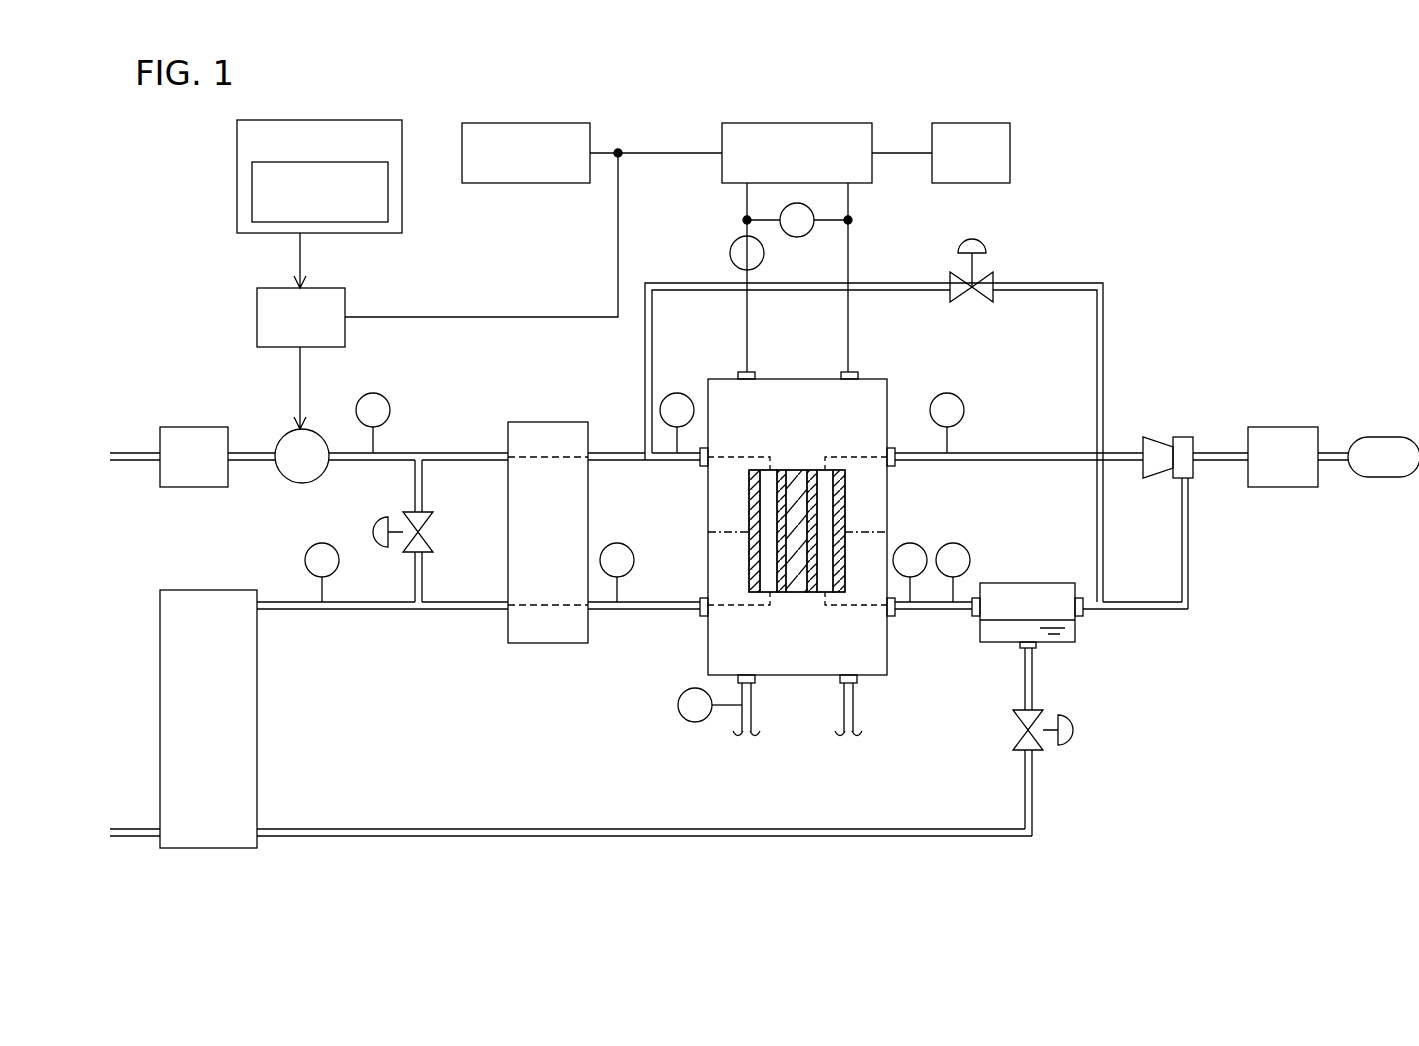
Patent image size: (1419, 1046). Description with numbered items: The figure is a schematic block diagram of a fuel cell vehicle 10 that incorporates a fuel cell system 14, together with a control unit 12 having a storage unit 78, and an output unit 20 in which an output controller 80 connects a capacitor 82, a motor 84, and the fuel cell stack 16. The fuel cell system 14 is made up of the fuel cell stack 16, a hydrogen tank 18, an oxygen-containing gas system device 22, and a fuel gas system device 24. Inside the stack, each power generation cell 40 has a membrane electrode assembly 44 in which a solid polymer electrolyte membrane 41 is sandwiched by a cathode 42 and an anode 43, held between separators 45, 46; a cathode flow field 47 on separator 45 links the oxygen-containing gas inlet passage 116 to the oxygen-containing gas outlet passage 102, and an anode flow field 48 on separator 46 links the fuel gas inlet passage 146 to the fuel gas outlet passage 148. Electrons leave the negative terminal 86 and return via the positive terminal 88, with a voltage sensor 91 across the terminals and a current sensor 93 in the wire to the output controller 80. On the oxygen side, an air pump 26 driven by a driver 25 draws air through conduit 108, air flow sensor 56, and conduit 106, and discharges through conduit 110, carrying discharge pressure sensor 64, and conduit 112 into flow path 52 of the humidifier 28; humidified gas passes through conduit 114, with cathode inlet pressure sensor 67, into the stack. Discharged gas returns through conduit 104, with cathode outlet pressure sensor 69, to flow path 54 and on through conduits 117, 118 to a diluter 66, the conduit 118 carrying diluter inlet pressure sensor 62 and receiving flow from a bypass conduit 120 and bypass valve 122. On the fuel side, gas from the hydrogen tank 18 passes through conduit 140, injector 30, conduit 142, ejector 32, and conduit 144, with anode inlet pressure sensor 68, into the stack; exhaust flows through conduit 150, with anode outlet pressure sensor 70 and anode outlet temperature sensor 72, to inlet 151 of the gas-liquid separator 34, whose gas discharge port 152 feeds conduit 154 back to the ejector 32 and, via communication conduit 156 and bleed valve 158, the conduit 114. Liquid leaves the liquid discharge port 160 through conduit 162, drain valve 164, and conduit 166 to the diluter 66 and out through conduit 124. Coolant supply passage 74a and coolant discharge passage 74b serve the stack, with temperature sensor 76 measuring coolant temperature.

The fuel cell vehicle 10 is at (1168, 122).
The control unit 12 is at (300, 120).
The fuel cell system 14 is at (1054, 189).
The fuel cell stack 16 is at (708, 530).
The hydrogen tank 18 is at (1375, 437).
The output unit 20 is at (880, 84).
The oxygen-containing gas system device 22 is at (206, 315).
The fuel gas system device 24 is at (1134, 312).
The driver 25 is at (330, 288).
The air pump 26 is at (285, 437).
The humidifier 28 is at (530, 422).
The injector 30 is at (1285, 427).
The ejector 32 is at (1152, 437).
The gas-liquid separator 34 is at (1045, 583).
The power generation cell 40 is at (746, 422).
The solid polymer electrolyte membrane 41 is at (797, 470).
The cathode 42 is at (781, 470).
The anode 43 is at (812, 470).
The membrane electrode assembly 44 is at (798, 528).
The separator 45 is at (755, 530).
The separator 46 is at (838, 520).
The cathode flow field 47 is at (769, 598).
The anode flow field 48 is at (825, 598).
The flow path 52 is at (520, 458).
The flow path 54 is at (520, 605).
The air flow sensor 56 is at (175, 427).
The diluter inlet pressure sensor 62 is at (305, 555).
The discharge pressure sensor 64 is at (385, 396).
The diluter 66 is at (257, 748).
The cathode inlet pressure sensor 67 is at (660, 400).
The anode inlet pressure sensor 68 is at (960, 396).
The cathode outlet pressure sensor 69 is at (617, 543).
The anode outlet pressure sensor 70 is at (910, 543).
The anode outlet temperature sensor 72 is at (963, 546).
The coolant supply passage 74a is at (857, 708).
The coolant discharge passage 74b is at (755, 708).
The temperature sensor 76 is at (678, 705).
The storage unit 78 is at (252, 190).
The output controller 80 is at (797, 123).
The capacitor 82 is at (540, 123).
The motor 84 is at (965, 123).
The negative terminal 86 is at (858, 372).
The positive terminal 88 is at (738, 372).
The voltage sensor 91 is at (814, 214).
The current sensor 93 is at (764, 255).
The oxygen-containing gas outlet passage 102 is at (702, 598).
The conduit 104 is at (630, 609).
The conduit 106 is at (255, 460).
The conduit 108 is at (135, 460).
The conduit 110 is at (345, 460).
The conduit 112 is at (450, 453).
The conduit 114 is at (660, 462).
The oxygen-containing gas inlet passage 116 is at (702, 466).
The conduit 117 is at (435, 612).
The conduit 118 is at (282, 612).
The bypass conduit 120 is at (425, 490).
The bypass valve 122 is at (378, 522).
The conduit 124 is at (130, 829).
The conduit 140 is at (1333, 460).
The conduit 142 is at (1215, 453).
The conduit 144 is at (1000, 460).
The fuel gas inlet passage 146 is at (895, 466).
The fuel gas outlet passage 148 is at (892, 616).
The conduit 150 is at (933, 609).
The inlet 151 is at (972, 602).
The gas discharge port 152 is at (1083, 616).
The conduit 154 is at (1188, 565).
The communication conduit 156 is at (1047, 290).
The bleed valve 158 is at (987, 248).
The liquid discharge port 160 is at (1022, 650).
The conduit 162 is at (1032, 683).
The drain valve 164 is at (1073, 730).
The conduit 166 is at (725, 829).